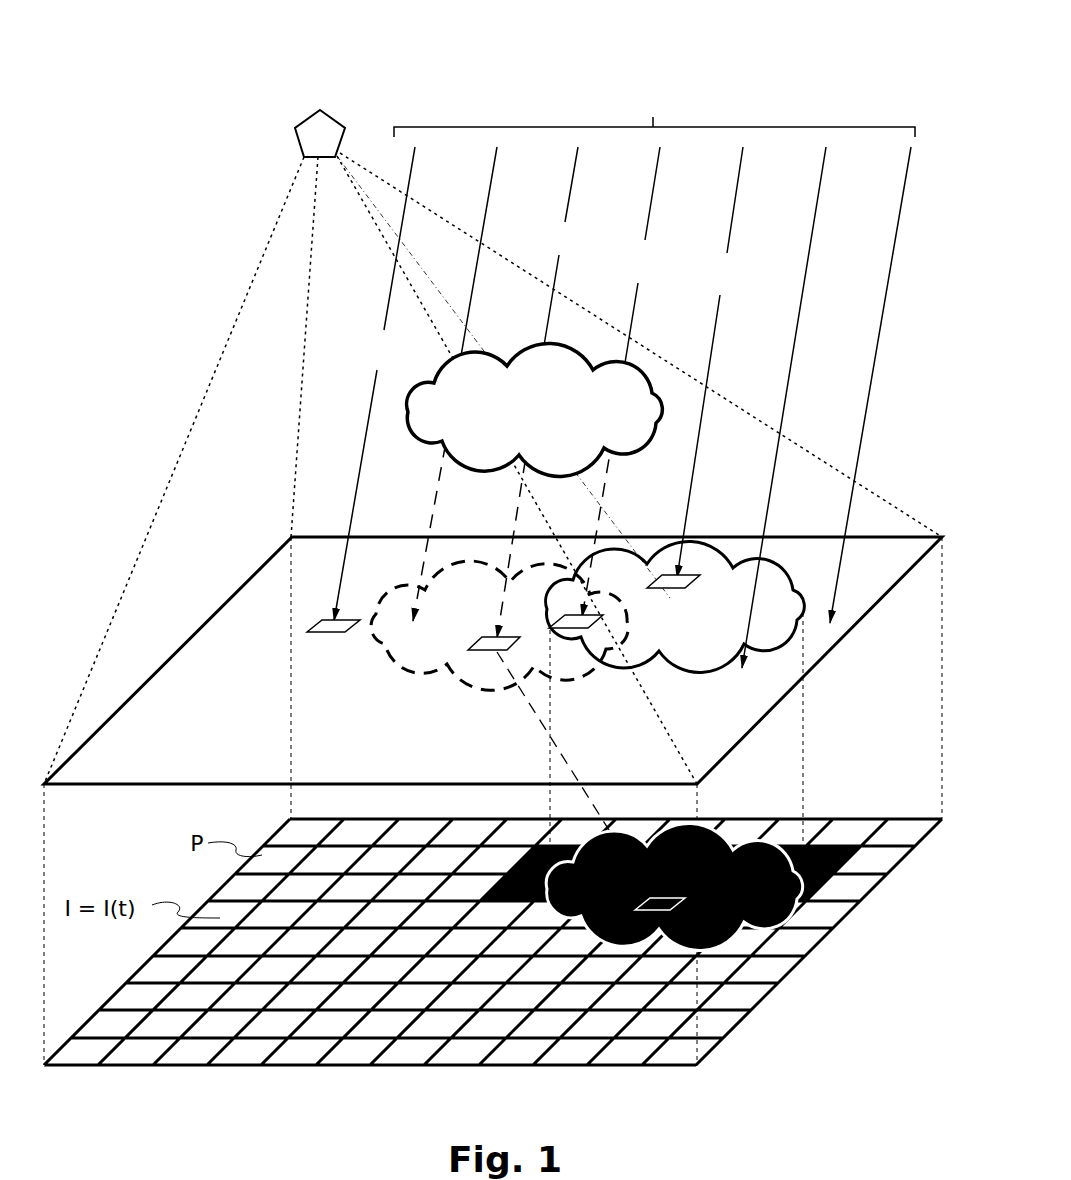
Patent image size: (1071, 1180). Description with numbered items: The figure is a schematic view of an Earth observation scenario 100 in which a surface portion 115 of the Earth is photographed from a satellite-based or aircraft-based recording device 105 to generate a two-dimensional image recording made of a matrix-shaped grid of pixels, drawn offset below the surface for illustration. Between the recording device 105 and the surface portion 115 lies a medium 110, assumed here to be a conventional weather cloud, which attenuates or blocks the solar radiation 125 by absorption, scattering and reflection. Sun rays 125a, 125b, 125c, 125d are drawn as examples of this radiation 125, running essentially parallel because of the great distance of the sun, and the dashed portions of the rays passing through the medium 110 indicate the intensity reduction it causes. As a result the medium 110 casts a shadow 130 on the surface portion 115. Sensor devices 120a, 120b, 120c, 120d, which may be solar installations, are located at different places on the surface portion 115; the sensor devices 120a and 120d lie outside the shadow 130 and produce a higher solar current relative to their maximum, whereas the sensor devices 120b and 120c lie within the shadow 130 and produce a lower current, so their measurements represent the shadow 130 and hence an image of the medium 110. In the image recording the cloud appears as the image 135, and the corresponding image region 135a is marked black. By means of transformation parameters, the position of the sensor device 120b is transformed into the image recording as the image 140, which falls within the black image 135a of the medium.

The scenario 100 is at (907, 70).
The recording device 105 is at (296, 125).
The medium 110 is at (556, 413).
The surface portion 115 is at (190, 758).
The sensor device 120a is at (325, 636).
The sensor device 120b is at (480, 655).
The sensor device 120c is at (578, 640).
The sensor device 120d is at (685, 572).
The solar radiation 125 is at (654, 105).
The sun ray 125a is at (374, 384).
The sun ray 125b is at (502, 392).
The sun ray 125c is at (628, 382).
The sun ray 125d is at (794, 407).
The shadow 130 is at (474, 630).
The image of the medium 135 is at (707, 630).
The image of the medium 135a is at (712, 890).
The image of the sensor device 140 is at (659, 897).